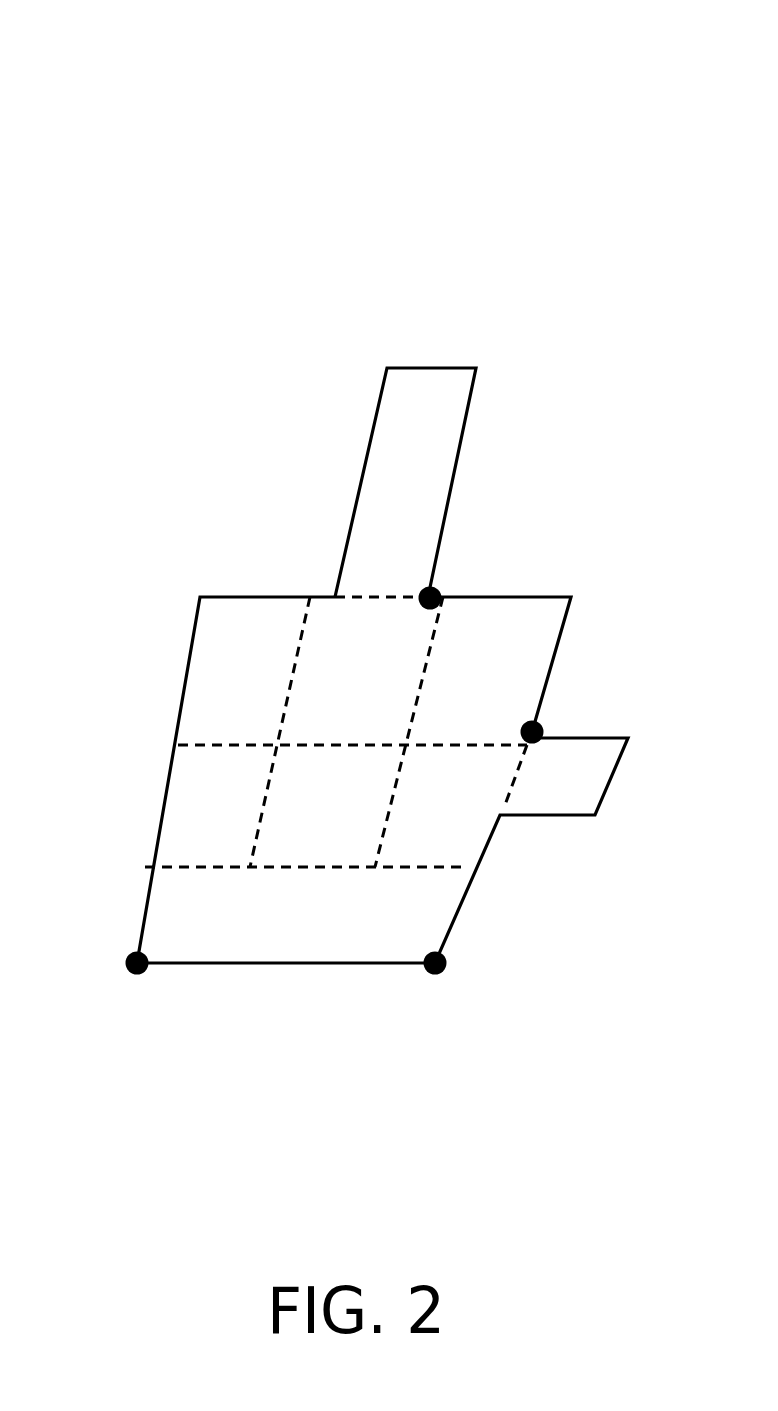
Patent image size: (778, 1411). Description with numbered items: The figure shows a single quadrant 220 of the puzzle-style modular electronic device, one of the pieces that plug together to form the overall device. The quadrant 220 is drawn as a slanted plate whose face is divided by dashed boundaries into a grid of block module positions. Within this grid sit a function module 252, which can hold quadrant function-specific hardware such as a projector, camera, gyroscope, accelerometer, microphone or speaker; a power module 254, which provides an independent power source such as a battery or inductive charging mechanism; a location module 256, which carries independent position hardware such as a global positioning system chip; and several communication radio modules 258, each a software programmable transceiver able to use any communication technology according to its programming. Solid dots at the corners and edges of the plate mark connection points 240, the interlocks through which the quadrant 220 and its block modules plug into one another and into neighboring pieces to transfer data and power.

The quadrant 220 is at (604, 31).
The connection points 240 is at (128, 960).
The function module 252 is at (224, 685).
The power module 254 is at (199, 811).
The location module 256 is at (321, 811).
The communication radio module 258 is at (346, 685).